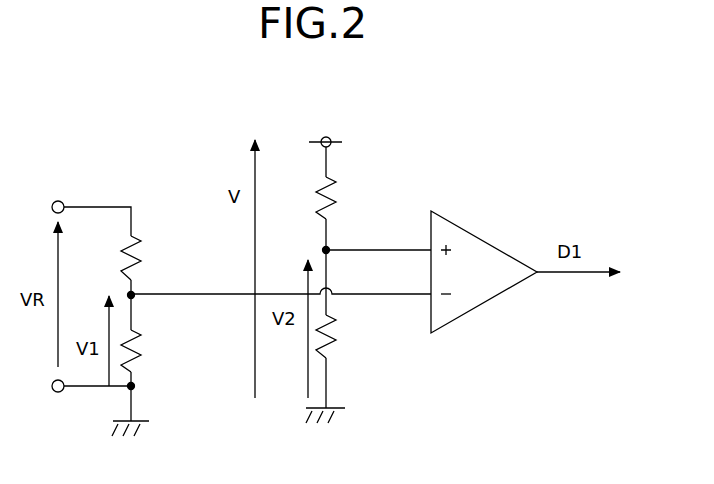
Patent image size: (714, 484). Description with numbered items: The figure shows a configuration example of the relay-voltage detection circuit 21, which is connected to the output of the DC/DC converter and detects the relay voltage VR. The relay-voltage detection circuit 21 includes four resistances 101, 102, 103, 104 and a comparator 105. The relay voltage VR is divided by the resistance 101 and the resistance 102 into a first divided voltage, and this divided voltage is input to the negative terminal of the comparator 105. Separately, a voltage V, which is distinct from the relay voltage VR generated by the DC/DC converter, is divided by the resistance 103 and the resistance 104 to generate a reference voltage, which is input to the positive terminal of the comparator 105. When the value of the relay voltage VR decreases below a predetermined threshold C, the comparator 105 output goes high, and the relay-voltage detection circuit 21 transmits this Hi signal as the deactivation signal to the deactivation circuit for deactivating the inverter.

The relay-voltage detection circuit 21 is at (466, 122).
The resistance 101 is at (141, 256).
The resistance 102 is at (141, 350).
The resistance 103 is at (336, 183).
The resistance 104 is at (336, 350).
The comparator 105 is at (503, 251).